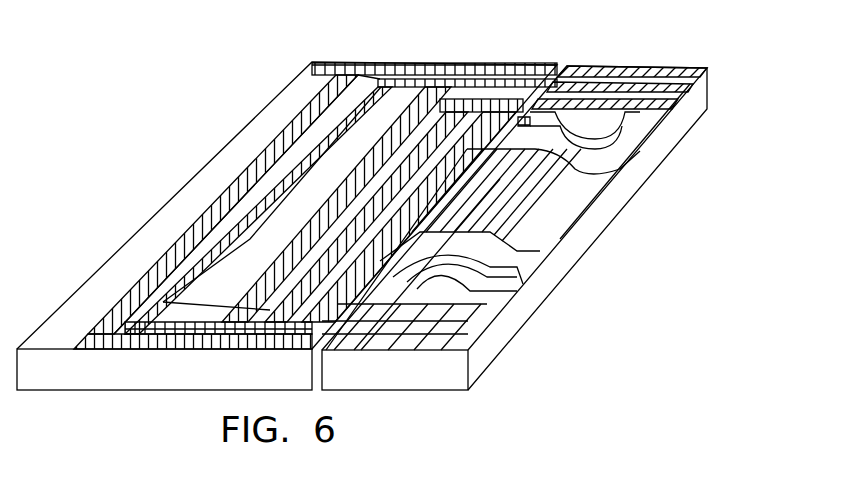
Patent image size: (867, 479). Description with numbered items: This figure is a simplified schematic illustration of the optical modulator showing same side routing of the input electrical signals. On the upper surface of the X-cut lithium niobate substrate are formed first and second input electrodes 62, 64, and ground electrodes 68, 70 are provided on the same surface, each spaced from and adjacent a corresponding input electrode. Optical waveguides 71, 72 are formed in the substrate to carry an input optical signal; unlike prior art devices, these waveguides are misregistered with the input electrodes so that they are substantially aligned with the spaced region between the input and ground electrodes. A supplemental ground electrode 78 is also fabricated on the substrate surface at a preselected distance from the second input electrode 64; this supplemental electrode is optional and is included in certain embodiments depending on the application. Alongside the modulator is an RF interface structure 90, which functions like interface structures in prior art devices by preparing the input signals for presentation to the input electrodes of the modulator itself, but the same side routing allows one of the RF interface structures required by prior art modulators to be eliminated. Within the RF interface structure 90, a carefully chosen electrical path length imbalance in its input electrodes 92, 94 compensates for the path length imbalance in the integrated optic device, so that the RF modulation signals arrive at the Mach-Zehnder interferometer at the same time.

The first input electrode 62 is at (352, 118).
The second input electrode 64 is at (428, 158).
The ground electrode 68 is at (222, 212).
The ground electrode 70 is at (293, 267).
The optical waveguide 71 is at (285, 148).
The optical waveguide 72 is at (372, 188).
The supplemental ground electrode 78 is at (398, 245).
The RF interface structure 90 is at (588, 224).
The input electrode of the RF interface structure 92 is at (505, 312).
The input electrode of the RF interface structure 94 is at (497, 271).